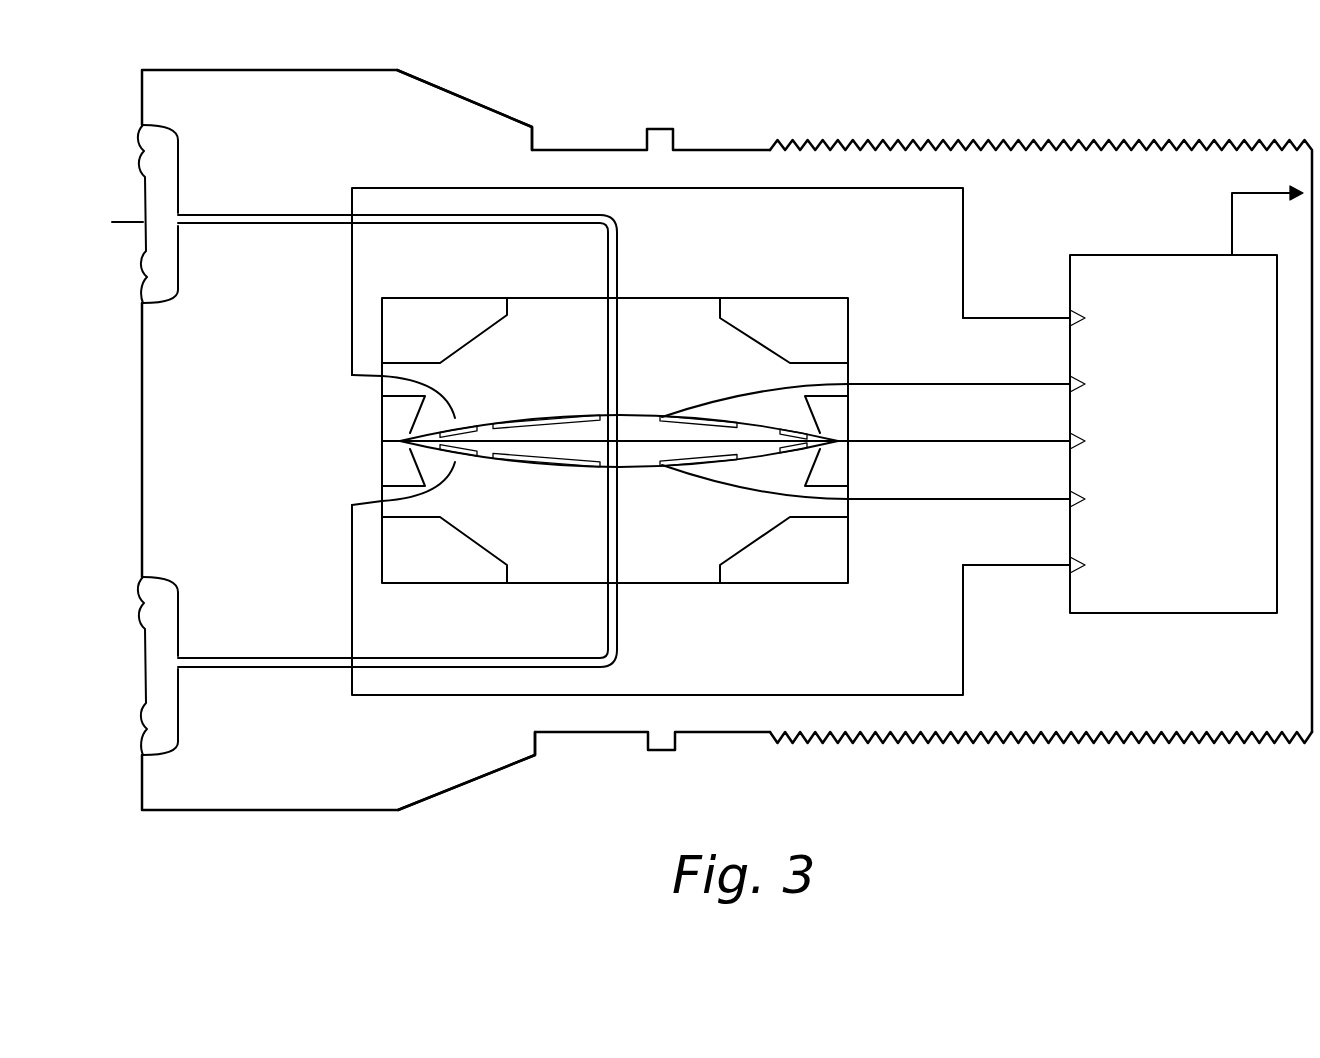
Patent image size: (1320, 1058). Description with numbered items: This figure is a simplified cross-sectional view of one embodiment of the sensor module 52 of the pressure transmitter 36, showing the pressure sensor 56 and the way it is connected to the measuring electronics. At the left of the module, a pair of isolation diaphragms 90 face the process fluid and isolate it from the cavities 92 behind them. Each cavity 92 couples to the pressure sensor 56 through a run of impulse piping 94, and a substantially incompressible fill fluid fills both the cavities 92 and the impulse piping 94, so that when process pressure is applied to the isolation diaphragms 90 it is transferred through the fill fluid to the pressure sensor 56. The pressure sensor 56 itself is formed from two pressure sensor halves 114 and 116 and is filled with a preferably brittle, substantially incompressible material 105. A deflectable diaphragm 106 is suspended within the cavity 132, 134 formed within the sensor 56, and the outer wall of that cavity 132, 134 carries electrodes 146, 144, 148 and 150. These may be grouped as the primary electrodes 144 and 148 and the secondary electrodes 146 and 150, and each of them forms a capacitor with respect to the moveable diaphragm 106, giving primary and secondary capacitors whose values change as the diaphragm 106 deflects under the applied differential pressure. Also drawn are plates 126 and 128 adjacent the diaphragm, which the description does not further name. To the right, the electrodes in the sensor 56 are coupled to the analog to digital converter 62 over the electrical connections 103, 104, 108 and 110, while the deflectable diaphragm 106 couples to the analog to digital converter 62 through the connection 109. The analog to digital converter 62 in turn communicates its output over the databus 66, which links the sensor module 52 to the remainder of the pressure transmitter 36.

The pressure transmitter 36 is at (559, 733).
The sensor module 52 is at (476, 105).
The pressure sensor 56 is at (784, 300).
The analog to digital converter 62 is at (1280, 346).
The databus 66 is at (1245, 195).
The isolation diaphragm 90 is at (112, 222).
The cavity 92 is at (163, 148).
The impulse piping 94 is at (618, 290).
The electrical connection 103 is at (1030, 316).
The electrical connection 104 is at (966, 384).
The substantially incompressible material 105 is at (615, 440).
The diaphragm 106 is at (608, 443).
The electrical connection 108 is at (940, 499).
The connection 109 is at (986, 441).
The electrical connection 110 is at (429, 491).
The pressure sensor half 114 is at (849, 341).
The pressure sensor half 116 is at (849, 541).
The capacitor plate 126 is at (494, 422).
The capacitor plate 128 is at (467, 458).
The cavity 132 is at (622, 433).
The cavity 134 is at (632, 452).
The primary electrode 144 is at (588, 414).
The secondary electrode 146 is at (467, 425).
The primary electrode 148 is at (550, 463).
The secondary electrode 150 is at (463, 458).